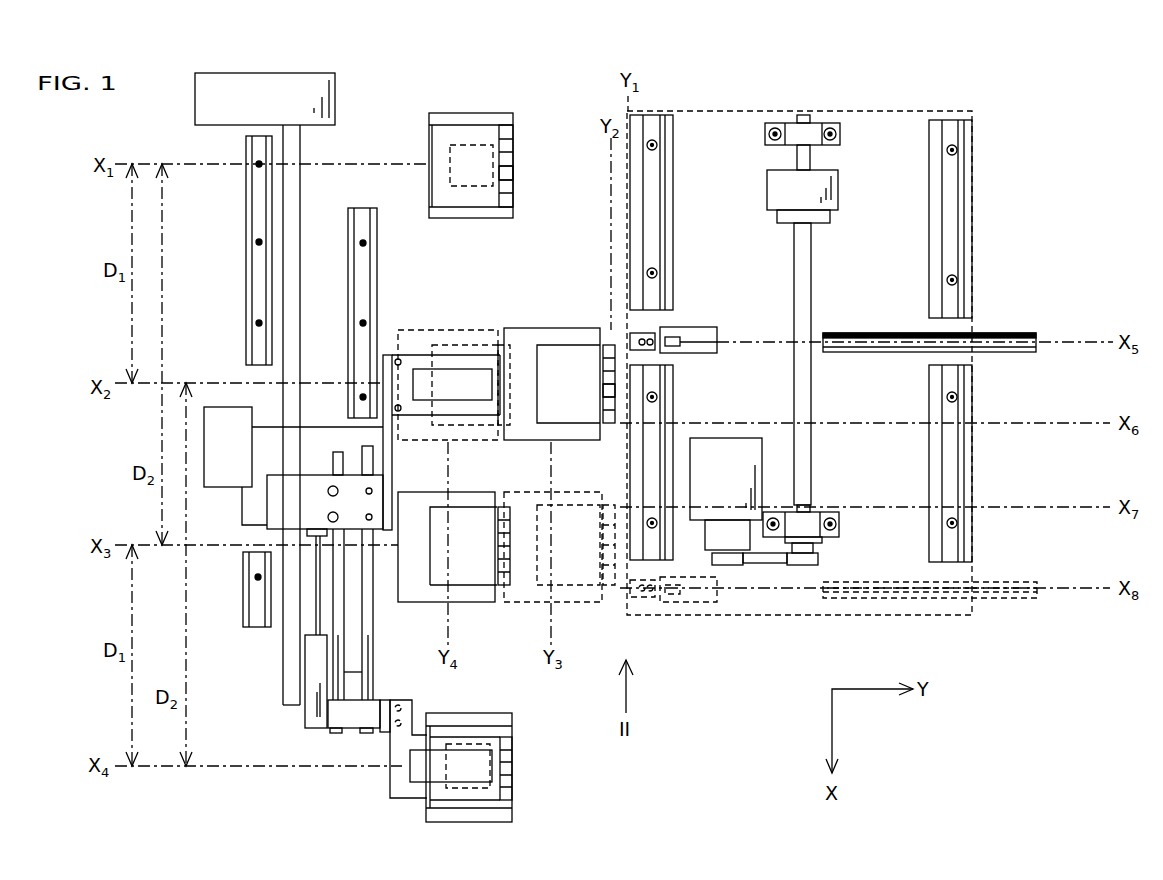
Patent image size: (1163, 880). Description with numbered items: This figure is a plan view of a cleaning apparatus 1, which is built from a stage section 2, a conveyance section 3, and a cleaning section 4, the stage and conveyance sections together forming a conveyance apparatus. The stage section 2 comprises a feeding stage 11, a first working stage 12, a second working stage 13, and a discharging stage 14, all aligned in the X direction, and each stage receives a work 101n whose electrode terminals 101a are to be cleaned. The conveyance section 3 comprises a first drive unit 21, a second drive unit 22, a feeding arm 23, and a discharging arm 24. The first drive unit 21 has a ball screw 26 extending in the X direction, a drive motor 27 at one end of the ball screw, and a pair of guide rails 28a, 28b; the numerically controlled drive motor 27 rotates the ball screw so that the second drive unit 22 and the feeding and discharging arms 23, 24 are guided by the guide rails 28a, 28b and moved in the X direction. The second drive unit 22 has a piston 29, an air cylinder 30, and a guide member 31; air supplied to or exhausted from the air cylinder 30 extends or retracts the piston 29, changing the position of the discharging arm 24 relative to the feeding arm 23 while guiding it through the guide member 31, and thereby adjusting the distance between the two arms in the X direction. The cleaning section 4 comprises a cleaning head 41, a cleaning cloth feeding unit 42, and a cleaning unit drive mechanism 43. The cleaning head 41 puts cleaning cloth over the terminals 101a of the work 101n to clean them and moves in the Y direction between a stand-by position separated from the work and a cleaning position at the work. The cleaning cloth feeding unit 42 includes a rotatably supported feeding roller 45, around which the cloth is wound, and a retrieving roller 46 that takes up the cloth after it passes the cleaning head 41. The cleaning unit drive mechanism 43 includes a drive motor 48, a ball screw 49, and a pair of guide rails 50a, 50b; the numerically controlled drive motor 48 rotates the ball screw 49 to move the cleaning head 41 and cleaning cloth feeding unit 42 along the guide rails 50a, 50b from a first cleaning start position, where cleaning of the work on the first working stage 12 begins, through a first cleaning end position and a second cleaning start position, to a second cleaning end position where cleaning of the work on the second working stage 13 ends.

The cleaning apparatus 1 is at (1043, 138).
The stage section 2 is at (535, 128).
The conveyance section 3 is at (355, 113).
The cleaning section 4 is at (870, 123).
The feeding stage 11 is at (447, 113).
The first working stage 12 is at (418, 328).
The second working stage 13 is at (420, 603).
The discharging stage 14 is at (467, 713).
The first drive unit 21 is at (237, 237).
The second drive unit 22 is at (272, 713).
The feeding arm 23 is at (412, 416).
The discharging arm 24 is at (390, 793).
The ball screw 26 is at (302, 197).
The drive motor 27 is at (216, 125).
The guide rail 28a is at (247, 188).
The guide rail 28b is at (378, 258).
The piston 29 is at (313, 612).
The air cylinder 30 is at (304, 722).
The guide member 31 is at (370, 672).
The cleaning head 41 is at (690, 327).
The cleaning cloth feeding unit 42 is at (1000, 302).
The cleaning unit drive mechanism 43 is at (773, 302).
The feeding roller 45 is at (963, 451).
The retrieving roller 46 is at (1012, 333).
The drive motor 48 is at (733, 438).
The ball screw 49 is at (812, 290).
The guide rail 50a is at (675, 242).
The guide rail 50b is at (930, 187).
The terminals 101a is at (513, 168).
The work 101n is at (488, 125).